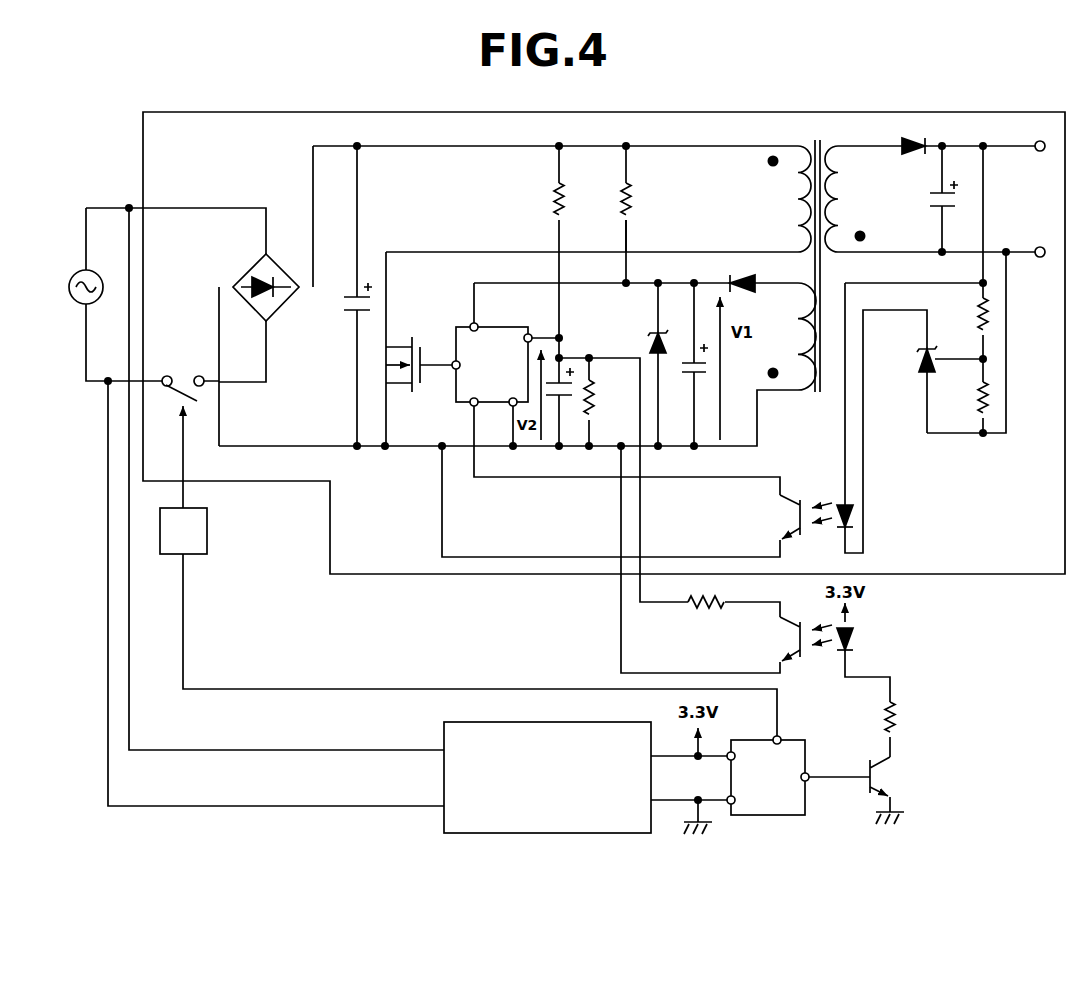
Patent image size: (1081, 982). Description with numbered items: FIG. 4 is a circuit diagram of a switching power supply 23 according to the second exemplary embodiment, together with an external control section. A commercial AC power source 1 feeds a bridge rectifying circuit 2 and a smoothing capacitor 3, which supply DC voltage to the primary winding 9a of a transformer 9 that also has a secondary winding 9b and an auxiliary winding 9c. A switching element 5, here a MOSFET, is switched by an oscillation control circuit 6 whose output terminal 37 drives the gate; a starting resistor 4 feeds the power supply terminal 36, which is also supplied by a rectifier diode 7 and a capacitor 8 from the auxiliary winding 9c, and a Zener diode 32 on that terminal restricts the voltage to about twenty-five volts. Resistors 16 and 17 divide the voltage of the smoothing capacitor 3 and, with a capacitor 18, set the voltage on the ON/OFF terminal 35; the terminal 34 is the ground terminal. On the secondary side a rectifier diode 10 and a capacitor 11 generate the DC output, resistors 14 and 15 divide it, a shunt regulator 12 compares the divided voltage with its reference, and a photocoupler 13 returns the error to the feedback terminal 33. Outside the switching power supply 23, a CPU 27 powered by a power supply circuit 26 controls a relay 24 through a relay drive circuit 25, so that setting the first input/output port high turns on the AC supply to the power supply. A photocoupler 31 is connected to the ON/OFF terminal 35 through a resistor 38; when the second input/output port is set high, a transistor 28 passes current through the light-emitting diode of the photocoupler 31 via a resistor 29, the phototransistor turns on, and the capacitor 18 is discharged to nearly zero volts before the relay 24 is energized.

The commercial AC power source 1 is at (78, 272).
The bridge rectifying circuit 2 is at (276, 256).
The smoothing capacitor 3 is at (350, 314).
The starting resistor 4 is at (636, 190).
The switching element 5 is at (418, 338).
The oscillation control circuit 6 is at (492, 348).
The rectifier diode 7 is at (749, 295).
The capacitor 8 is at (707, 380).
The transformer 9 is at (750, 231).
The primary winding 9a is at (718, 199).
The secondary winding 9b is at (849, 199).
The auxiliary winding 9c is at (790, 336).
The rectifier diode 10 is at (912, 137).
The capacitor 11 is at (927, 207).
The shunt regulator 12 is at (918, 360).
The photocoupler 13 is at (820, 494).
The resistor 14 is at (993, 300).
The resistor 15 is at (993, 386).
The resistor 16 is at (550, 196).
The resistor 17 is at (596, 450).
The capacitor 18 is at (572, 436).
The switching power supply 23 is at (606, 112).
The relay 24 is at (183, 376).
The relay drive circuit 25 is at (200, 556).
The power supply circuit 26 is at (444, 744).
The CPU 27 is at (806, 806).
The transistor 28 is at (900, 770).
The resistor 29 is at (903, 708).
The photocoupler 31 is at (808, 666).
The Zener diode 32 is at (648, 338).
The feedback terminal 33 is at (472, 394).
The ground terminal 34 is at (514, 394).
The ON/OFF terminal 35 is at (517, 342).
The power supply terminal 36 is at (472, 337).
The output terminal 37 is at (467, 364).
The resistor 38 is at (690, 612).